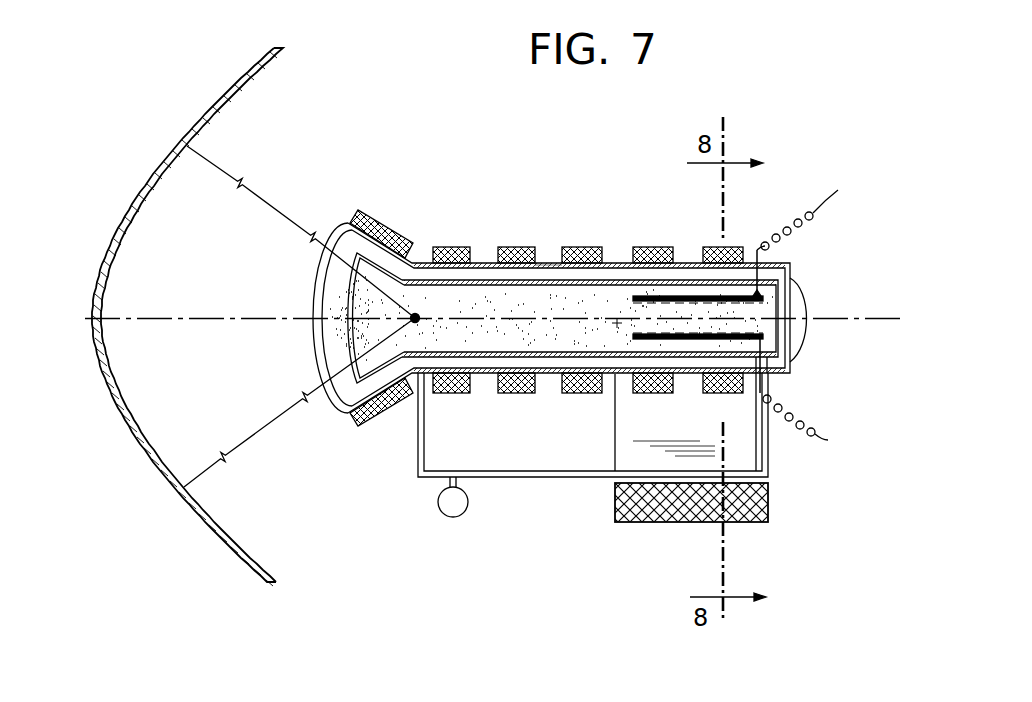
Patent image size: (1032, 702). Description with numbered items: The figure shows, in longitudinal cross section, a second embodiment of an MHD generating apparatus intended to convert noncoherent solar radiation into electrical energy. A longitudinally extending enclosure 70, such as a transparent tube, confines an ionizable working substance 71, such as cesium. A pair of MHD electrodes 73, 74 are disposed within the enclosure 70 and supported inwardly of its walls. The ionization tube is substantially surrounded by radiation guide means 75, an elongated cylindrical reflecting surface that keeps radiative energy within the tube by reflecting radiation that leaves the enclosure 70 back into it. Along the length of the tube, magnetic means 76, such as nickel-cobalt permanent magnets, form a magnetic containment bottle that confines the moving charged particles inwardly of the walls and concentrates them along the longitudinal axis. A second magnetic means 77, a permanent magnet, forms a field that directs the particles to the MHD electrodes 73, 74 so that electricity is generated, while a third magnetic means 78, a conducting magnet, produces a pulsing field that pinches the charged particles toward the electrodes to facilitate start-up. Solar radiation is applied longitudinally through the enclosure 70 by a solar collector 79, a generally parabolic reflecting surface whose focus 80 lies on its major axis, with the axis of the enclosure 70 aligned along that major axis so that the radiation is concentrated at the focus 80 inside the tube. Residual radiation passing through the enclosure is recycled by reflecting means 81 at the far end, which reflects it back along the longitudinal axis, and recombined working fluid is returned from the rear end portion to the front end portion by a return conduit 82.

The enclosure 70 is at (480, 275).
The ionizable working substance 71 is at (336, 285).
The MHD electrode 73 is at (688, 296).
The MHD electrode 74 is at (688, 343).
The radiation guide means 75 is at (548, 260).
The magnetic means 76 is at (456, 226).
The second magnetic means 77 is at (657, 522).
The third magnetic means 78 is at (378, 223).
The solar collector 79 is at (203, 124).
The focus 80 is at (421, 312).
The reflecting means 81 is at (800, 307).
The return conduit 82 is at (550, 478).